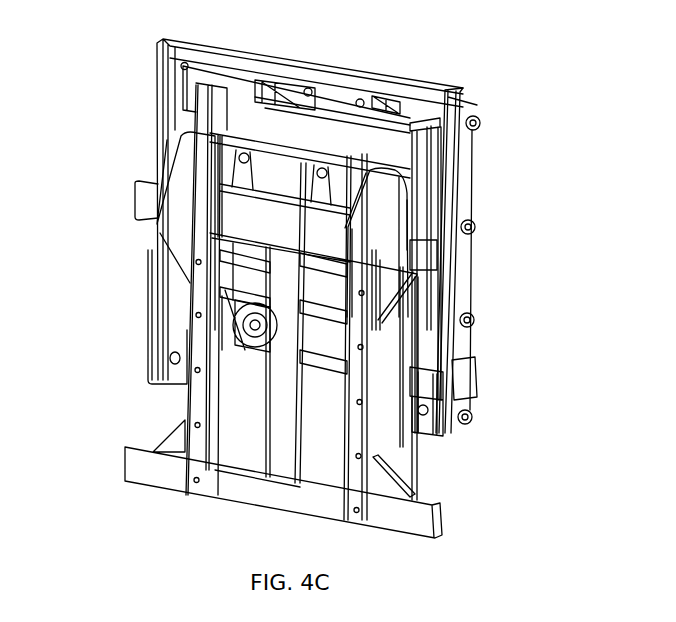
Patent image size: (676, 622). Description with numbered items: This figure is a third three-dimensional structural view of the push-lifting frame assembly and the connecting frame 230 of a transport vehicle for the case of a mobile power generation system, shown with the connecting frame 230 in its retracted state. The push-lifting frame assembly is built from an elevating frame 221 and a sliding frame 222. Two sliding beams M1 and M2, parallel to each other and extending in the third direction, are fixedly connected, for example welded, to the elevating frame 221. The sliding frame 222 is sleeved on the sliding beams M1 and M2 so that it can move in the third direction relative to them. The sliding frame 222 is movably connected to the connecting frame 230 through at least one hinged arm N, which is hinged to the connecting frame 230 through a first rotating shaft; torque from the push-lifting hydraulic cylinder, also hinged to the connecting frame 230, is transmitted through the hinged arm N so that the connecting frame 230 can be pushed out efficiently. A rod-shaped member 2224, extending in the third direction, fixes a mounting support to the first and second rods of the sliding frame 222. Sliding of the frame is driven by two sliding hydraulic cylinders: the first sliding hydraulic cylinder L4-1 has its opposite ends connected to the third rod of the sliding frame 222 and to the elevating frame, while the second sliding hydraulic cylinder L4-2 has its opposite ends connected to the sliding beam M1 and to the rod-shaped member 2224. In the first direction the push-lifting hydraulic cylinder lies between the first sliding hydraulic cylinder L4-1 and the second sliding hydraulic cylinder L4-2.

The first sliding hydraulic cylinder L4-1 is at (337, 100).
The elevating frame 221 is at (413, 78).
The sliding beam M2 is at (437, 147).
The sliding frame 222 is at (383, 148).
The rod-shaped member 2224 is at (397, 352).
The connecting frame 230 is at (153, 467).
The sliding beam M1 is at (425, 387).
The hinged arm N is at (417, 460).
The second sliding hydraulic cylinder L4-2 is at (318, 360).